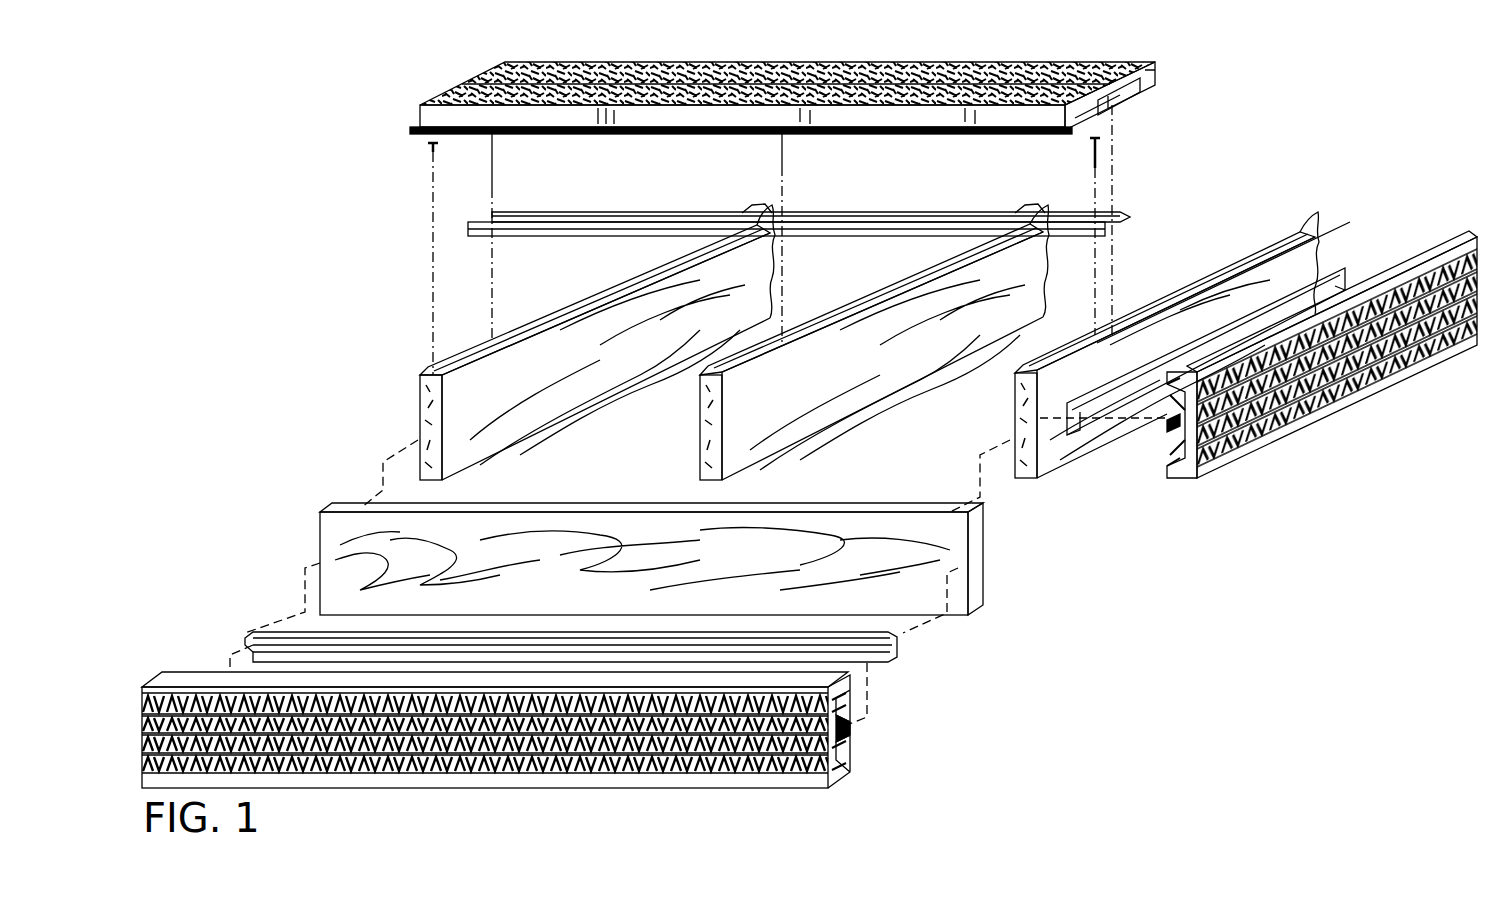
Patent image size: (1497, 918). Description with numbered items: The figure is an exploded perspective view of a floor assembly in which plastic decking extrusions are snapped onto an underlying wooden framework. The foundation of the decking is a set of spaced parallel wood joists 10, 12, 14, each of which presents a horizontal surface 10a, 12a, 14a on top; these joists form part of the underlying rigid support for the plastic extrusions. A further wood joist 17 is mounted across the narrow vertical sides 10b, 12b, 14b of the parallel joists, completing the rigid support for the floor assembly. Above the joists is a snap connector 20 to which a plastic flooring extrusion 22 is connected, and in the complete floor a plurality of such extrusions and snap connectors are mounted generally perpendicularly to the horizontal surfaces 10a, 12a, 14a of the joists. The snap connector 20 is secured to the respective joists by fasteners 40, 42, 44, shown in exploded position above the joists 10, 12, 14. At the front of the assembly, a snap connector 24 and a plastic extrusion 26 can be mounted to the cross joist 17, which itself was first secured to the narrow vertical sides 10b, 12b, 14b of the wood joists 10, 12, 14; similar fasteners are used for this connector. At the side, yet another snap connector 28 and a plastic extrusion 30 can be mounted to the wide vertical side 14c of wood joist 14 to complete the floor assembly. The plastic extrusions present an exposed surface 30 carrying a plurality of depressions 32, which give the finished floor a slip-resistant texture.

The wood joist 10 is at (541, 342).
The horizontal surface 10a is at (468, 350).
The narrow vertical side 10b is at (433, 427).
The wood joist 12 is at (834, 342).
The horizontal surface 12a is at (868, 293).
The narrow vertical side 12b is at (712, 418).
The wood joist 14 is at (1152, 335).
The horizontal surface 14a is at (1220, 270).
The narrow vertical side 14b is at (1015, 425).
The wide vertical side 14c is at (1053, 448).
The wood joist 17 is at (955, 548).
The snap connector 20 is at (866, 217).
The plastic flooring extrusion 22 is at (1070, 72).
The snap connector 24 is at (900, 648).
The plastic extrusion 26 is at (852, 768).
The snap connector 28 is at (1320, 275).
The plastic extrusion 30 is at (557, 66).
The depressions 32 is at (660, 75).
The fastener 40 is at (492, 140).
The fastener 42 is at (782, 140).
The fastener 44 is at (1093, 140).